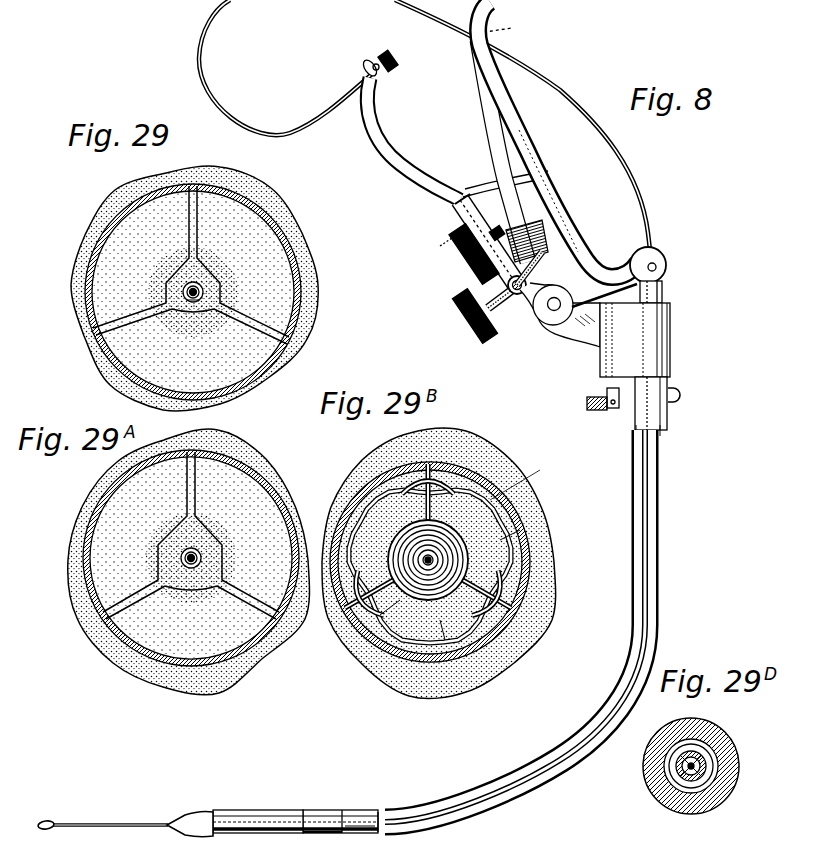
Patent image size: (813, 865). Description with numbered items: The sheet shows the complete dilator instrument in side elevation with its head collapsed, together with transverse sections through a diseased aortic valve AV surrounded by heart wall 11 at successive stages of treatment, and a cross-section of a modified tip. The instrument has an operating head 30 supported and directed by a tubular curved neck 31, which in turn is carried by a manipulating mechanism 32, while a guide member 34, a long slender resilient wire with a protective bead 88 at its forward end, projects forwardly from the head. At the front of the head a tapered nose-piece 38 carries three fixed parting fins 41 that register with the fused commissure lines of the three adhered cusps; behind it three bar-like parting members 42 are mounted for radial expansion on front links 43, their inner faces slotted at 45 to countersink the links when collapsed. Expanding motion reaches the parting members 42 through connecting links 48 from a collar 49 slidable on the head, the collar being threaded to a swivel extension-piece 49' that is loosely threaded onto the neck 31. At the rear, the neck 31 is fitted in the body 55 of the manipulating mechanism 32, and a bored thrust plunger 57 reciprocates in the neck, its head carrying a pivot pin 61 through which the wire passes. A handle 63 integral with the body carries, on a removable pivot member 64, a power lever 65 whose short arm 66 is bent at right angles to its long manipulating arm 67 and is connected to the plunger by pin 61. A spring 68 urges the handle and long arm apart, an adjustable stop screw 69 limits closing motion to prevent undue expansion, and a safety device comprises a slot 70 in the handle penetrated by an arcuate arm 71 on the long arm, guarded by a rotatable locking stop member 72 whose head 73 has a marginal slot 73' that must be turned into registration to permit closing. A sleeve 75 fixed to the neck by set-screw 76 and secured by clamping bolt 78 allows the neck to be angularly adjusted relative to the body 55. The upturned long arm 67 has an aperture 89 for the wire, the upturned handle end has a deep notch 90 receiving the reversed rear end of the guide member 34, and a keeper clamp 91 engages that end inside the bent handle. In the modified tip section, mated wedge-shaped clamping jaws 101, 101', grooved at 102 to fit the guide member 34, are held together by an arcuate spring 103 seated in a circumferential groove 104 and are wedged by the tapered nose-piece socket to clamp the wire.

In FIG. 29, the heart wall 11 is at (290, 260).
In FIG. 29A, the heart wall 11 is at (128, 670).
In FIG. 29B, the heart wall 11 is at (444, 698).
In FIG. 8, the operating head 30 is at (330, 803).
In FIG. 29, the operating head 30 is at (230, 266).
In FIG. 29A, the operating head 30 is at (228, 548).
In FIG. 29B, the operating head 30 is at (490, 510).
In FIG. 8, the tubular curved neck 31 is at (500, 793).
In FIG. 8, the manipulating mechanism 32 is at (447, 160).
In FIG. 8, the guide member 34 is at (468, 32).
In FIG. 29, the guide member 34 is at (185, 290).
In FIG. 29A, the guide member 34 is at (188, 570).
In FIG. 29B, the guide member 34 is at (395, 620).
In FIG. 29D, the guide member 34 is at (700, 750).
In FIG. 8, the nose-piece 38 is at (206, 810).
In FIG. 29, the nose-piece 38 is at (201, 318).
In FIG. 29A, the nose-piece 38 is at (220, 512).
In FIG. 29B, the nose-piece 38 is at (470, 492).
In FIG. 29D, the nose-piece 38 is at (650, 802).
In FIG. 29, the fixed parting fins 41 is at (210, 262).
In FIG. 29A, the fixed parting fins 41 is at (185, 540).
In FIG. 29B, the fixed parting fins 41 is at (370, 490).
In FIG. 8, the bar-like parting members 42 is at (268, 808).
In FIG. 29B, the bar-like parting members 42 is at (445, 470).
In FIG. 29B, the front links 43 is at (470, 470).
In FIG. 29B, the longitudinal slot 45 is at (392, 482).
In FIG. 8, the connecting links 48 is at (320, 834).
In FIG. 8, the collar 49 is at (340, 799).
In FIG. 8, the swivel extension-piece 49' is at (360, 844).
In FIG. 8, the body of manipulating mechanism 55 is at (674, 344).
In FIG. 8, the thrust plunger 57 is at (660, 292).
In FIG. 8, the pivot pin 61 is at (658, 262).
In FIG. 8, the handle 63 is at (461, 207).
In FIG. 8, the removable pivot member 64 is at (553, 312).
In FIG. 8, the power lever 65 is at (572, 242).
In FIG. 8, the short arm 66 is at (624, 266).
In FIG. 8, the long manipulating arm 67 is at (560, 215).
In FIG. 8, the spring 68 is at (543, 215).
In FIG. 8, the adjustable stop screw 69 is at (520, 296).
In FIG. 8, the slot 70 is at (461, 258).
In FIG. 8, the arcuate arm 71 is at (480, 192).
In FIG. 8, the rotatable locking stop member 72 is at (480, 303).
In FIG. 8, the head of locking stop member 73 is at (447, 257).
In FIG. 8, the marginal slot 73' is at (417, 255).
In FIG. 8, the sleeve 75 is at (640, 423).
In FIG. 8, the set-screw 76 is at (680, 396).
In FIG. 8, the clamping bolt 78 is at (600, 392).
In FIG. 8, the protective bead 88 is at (52, 820).
In FIG. 29, the protective bead 88 is at (188, 302).
In FIG. 29A, the protective bead 88 is at (180, 558).
In FIG. 29B, the protective bead 88 is at (395, 530).
In FIG. 8, the aperture 89 is at (505, 28).
In FIG. 8, the deep notch 90 is at (363, 75).
In FIG. 8, the keeper clamp 91 is at (393, 72).
In FIG. 29D, the clamping jaw 101 is at (701, 803).
In FIG. 29D, the clamping jaw 101' is at (670, 740).
In FIG. 29D, the longitudinal groove 102 is at (702, 760).
In FIG. 29D, the arcuate spring 103 is at (664, 760).
In FIG. 29D, the circumferential groove 104 is at (670, 780).
In FIG. 29, the aortic valve annulus AV is at (300, 250).
In FIG. 29A, the aortic valve annulus AV is at (110, 580).
In FIG. 29B, the aortic valve annulus AV is at (512, 522).